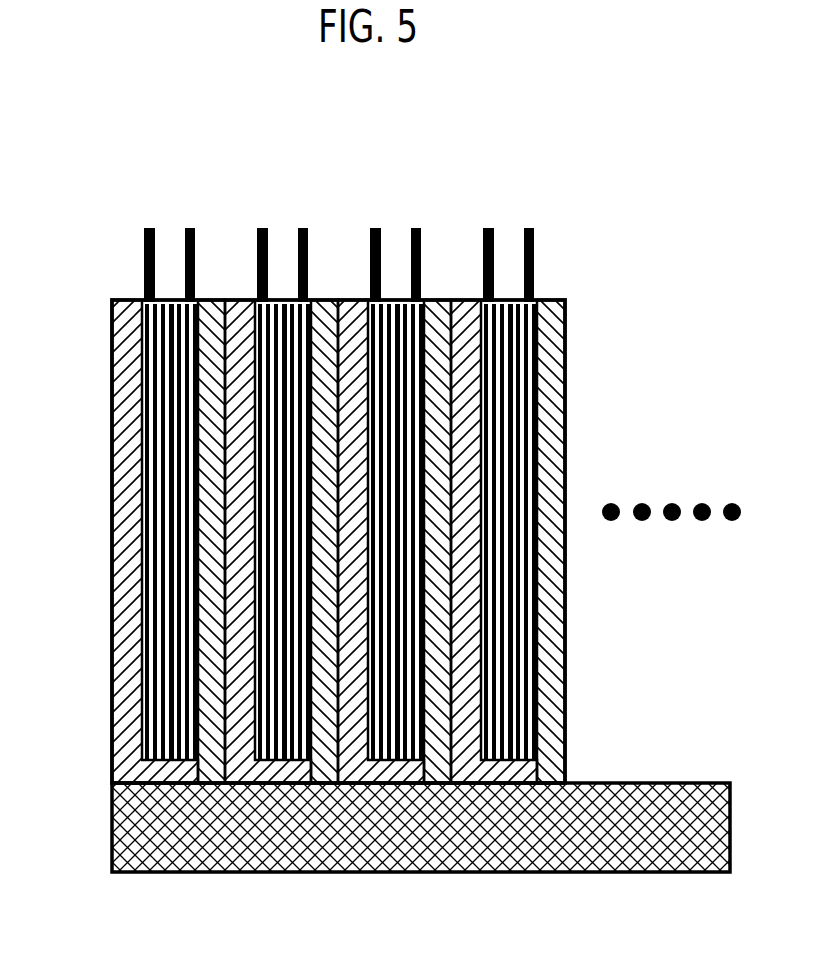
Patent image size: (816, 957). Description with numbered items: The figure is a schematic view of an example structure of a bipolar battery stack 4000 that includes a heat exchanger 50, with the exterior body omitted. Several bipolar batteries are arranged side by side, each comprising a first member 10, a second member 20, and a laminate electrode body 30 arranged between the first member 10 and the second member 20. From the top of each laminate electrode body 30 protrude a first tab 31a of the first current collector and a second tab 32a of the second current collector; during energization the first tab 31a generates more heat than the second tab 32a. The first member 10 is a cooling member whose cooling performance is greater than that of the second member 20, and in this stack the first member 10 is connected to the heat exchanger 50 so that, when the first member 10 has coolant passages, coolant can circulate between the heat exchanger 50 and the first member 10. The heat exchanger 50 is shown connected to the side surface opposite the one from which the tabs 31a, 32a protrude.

The bipolar battery stack 4000 is at (360, 119).
The first member 10 is at (112, 778).
The second member 20 is at (212, 298).
The laminate electrode body 30 is at (169, 312).
The first tab 31a is at (150, 229).
The second tab 32a is at (189, 229).
The heat exchanger 50 is at (561, 857).